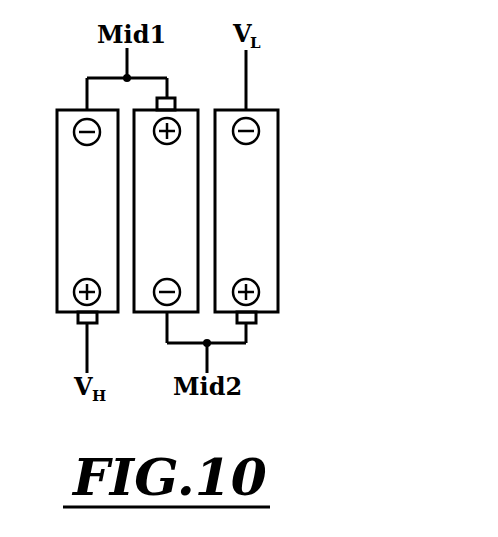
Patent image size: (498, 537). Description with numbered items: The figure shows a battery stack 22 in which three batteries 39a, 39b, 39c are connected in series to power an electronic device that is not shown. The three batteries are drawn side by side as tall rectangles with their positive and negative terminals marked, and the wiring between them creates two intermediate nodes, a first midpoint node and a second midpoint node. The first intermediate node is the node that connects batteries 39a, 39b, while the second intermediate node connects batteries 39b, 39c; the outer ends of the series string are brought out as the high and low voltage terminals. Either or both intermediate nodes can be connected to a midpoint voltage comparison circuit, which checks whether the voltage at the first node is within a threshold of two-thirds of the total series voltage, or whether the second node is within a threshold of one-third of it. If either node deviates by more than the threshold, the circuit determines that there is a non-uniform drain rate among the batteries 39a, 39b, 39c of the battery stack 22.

The battery stack 22 is at (347, 77).
The battery 39a is at (106, 217).
The battery 39b is at (185, 217).
The battery 39c is at (263, 215).